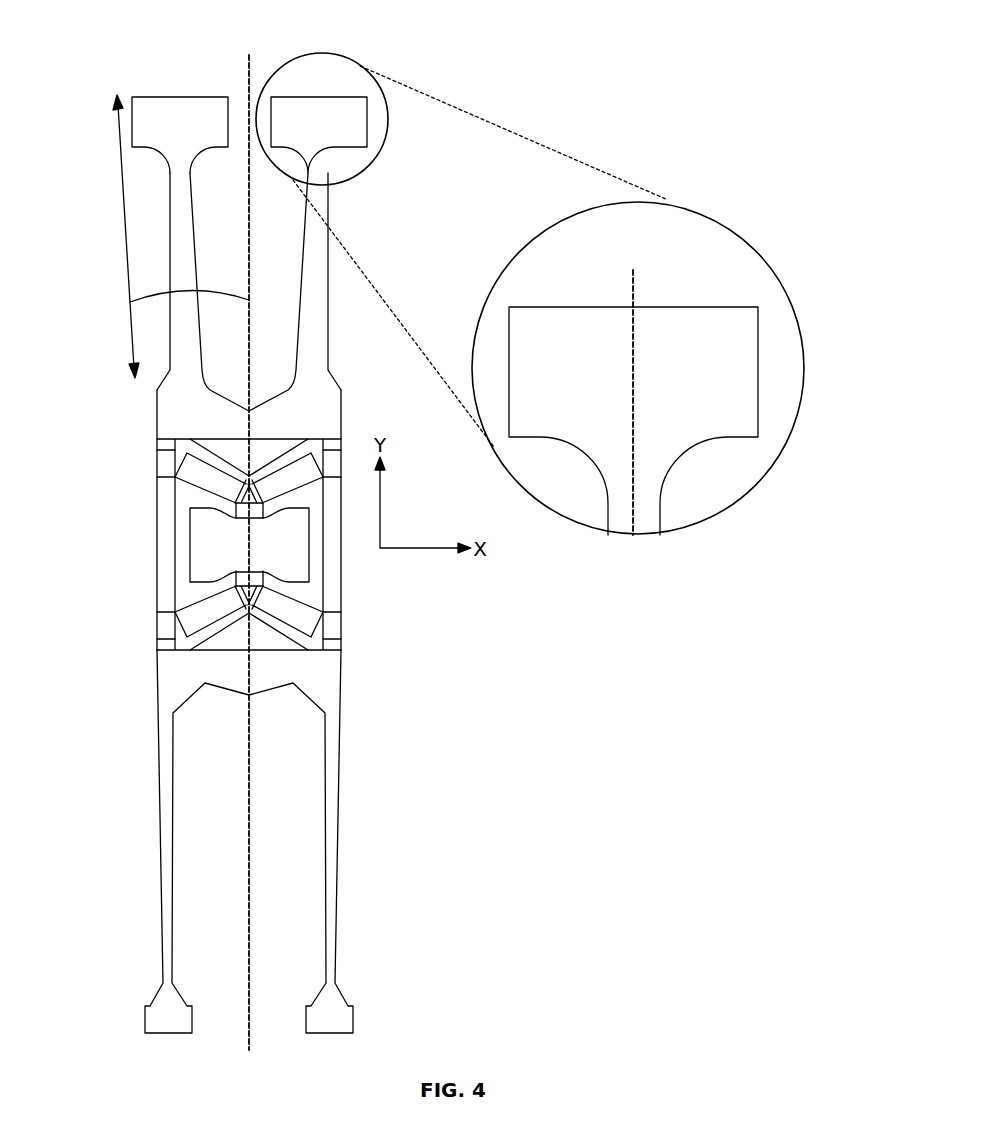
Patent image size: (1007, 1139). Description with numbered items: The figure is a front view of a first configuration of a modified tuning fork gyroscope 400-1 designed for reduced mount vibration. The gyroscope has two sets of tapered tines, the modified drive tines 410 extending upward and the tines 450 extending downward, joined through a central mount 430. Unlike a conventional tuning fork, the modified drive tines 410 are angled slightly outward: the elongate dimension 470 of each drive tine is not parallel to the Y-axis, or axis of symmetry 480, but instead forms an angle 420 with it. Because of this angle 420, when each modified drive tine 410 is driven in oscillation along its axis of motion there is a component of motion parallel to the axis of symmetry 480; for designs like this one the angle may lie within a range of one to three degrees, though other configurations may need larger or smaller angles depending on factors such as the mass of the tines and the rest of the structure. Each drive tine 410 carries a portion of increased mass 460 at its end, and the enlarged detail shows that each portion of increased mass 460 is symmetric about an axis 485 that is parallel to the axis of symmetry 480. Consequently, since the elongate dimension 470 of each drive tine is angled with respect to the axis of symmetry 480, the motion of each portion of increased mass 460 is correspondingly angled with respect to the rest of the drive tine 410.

The modified tuning fork gyroscope 400-1 is at (505, 940).
The modified drive tines 410 is at (180, 268).
The angle 420 is at (210, 290).
The mount 430 is at (249, 545).
The tines 450 is at (167, 785).
The portion of increased mass 460 is at (180, 107).
The elongate dimension 470 is at (130, 327).
The axis of symmetry 480 is at (248, 70).
The axis 485 is at (633, 287).